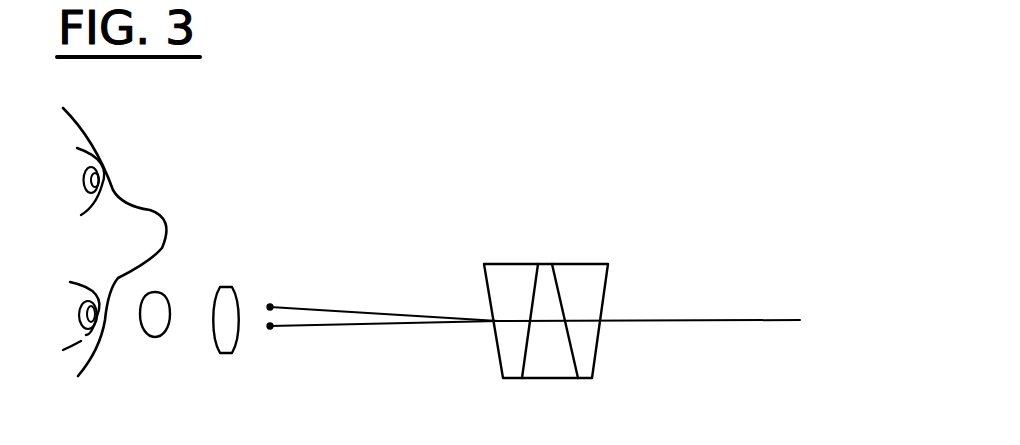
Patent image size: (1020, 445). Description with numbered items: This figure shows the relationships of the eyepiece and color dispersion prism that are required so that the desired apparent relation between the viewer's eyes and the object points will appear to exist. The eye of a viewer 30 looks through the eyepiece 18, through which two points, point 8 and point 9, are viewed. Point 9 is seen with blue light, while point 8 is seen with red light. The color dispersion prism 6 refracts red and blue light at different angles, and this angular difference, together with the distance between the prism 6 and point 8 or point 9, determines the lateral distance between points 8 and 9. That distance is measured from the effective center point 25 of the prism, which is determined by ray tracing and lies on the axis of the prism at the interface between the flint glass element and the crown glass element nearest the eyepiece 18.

The eye of a viewer 30 is at (74, 374).
The eyepiece 18 is at (218, 350).
The point 9 is at (282, 273).
The point 8 is at (270, 328).
The effective center point 25 is at (525, 327).
The color dispersion prism 6 is at (532, 380).